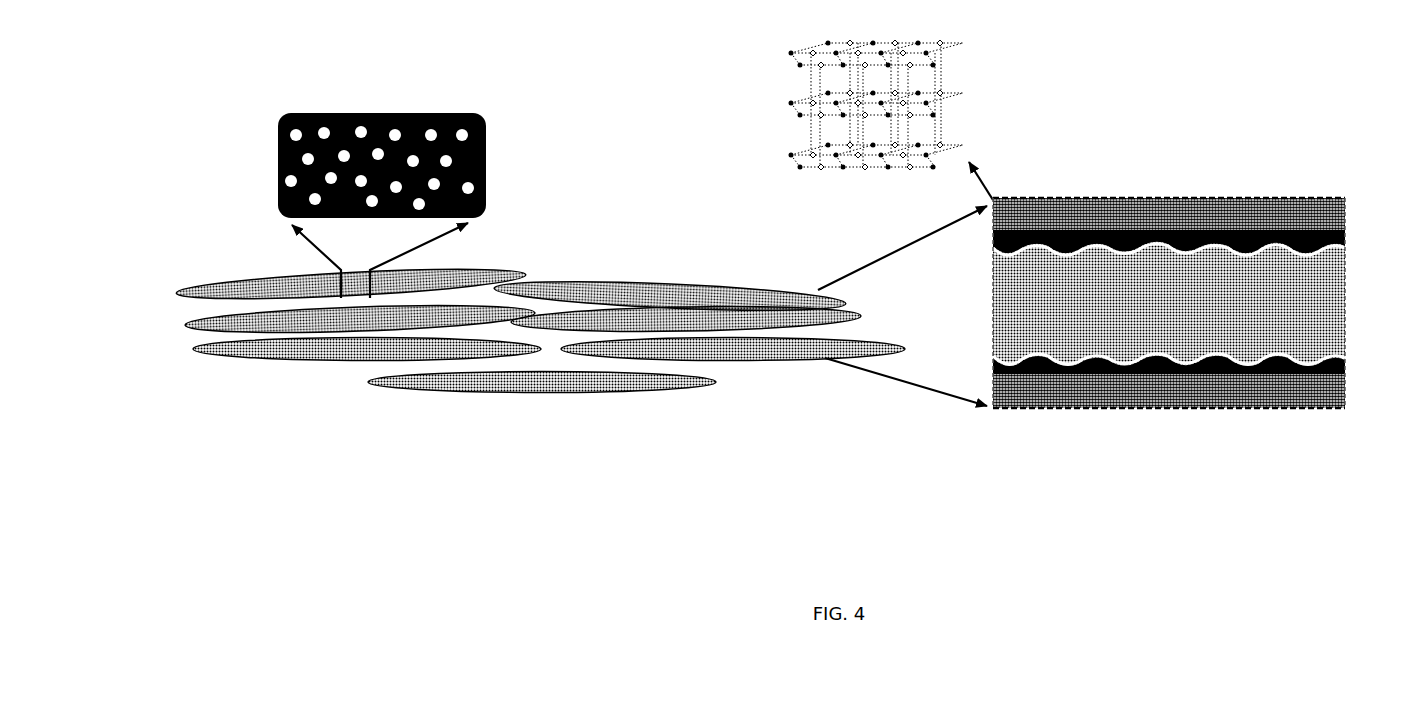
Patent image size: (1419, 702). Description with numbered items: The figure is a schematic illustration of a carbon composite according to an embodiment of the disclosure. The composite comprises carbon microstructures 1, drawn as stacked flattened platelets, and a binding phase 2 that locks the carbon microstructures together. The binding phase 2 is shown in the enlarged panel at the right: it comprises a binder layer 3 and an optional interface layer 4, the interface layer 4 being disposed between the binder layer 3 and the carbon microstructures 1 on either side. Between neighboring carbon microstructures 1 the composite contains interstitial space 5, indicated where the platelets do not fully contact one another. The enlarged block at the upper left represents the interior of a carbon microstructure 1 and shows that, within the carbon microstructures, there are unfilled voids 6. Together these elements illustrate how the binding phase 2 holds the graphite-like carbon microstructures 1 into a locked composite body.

The carbon microstructures 1 is at (700, 283).
The binding phase 2 is at (493, 353).
The binder layer 3 is at (1078, 292).
The interface layer 4 is at (1233, 223).
The interstitial space 5 is at (605, 353).
The unfilled voids 6 is at (454, 127).